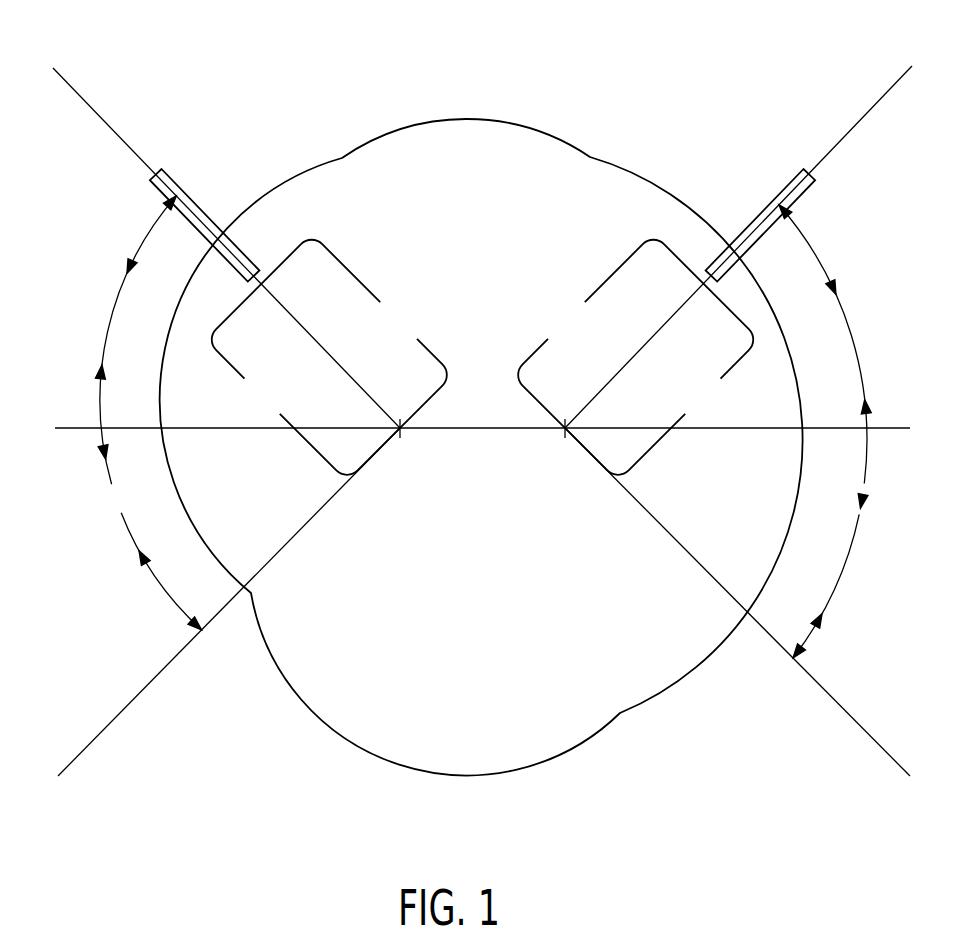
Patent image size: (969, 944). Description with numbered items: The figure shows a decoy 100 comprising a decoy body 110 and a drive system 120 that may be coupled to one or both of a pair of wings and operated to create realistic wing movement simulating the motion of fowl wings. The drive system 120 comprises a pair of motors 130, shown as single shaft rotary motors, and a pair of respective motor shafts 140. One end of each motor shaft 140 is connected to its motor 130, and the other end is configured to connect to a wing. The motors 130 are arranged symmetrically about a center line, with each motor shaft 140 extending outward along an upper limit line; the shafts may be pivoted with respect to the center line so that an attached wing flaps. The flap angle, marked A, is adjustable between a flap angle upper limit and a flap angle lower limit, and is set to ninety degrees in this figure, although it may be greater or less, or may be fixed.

The decoy 100 is at (317, 88).
The decoy body 110 is at (476, 118).
The drive system 120 is at (378, 276).
The motor 130 is at (400, 438).
The motor shaft 140 is at (192, 195).